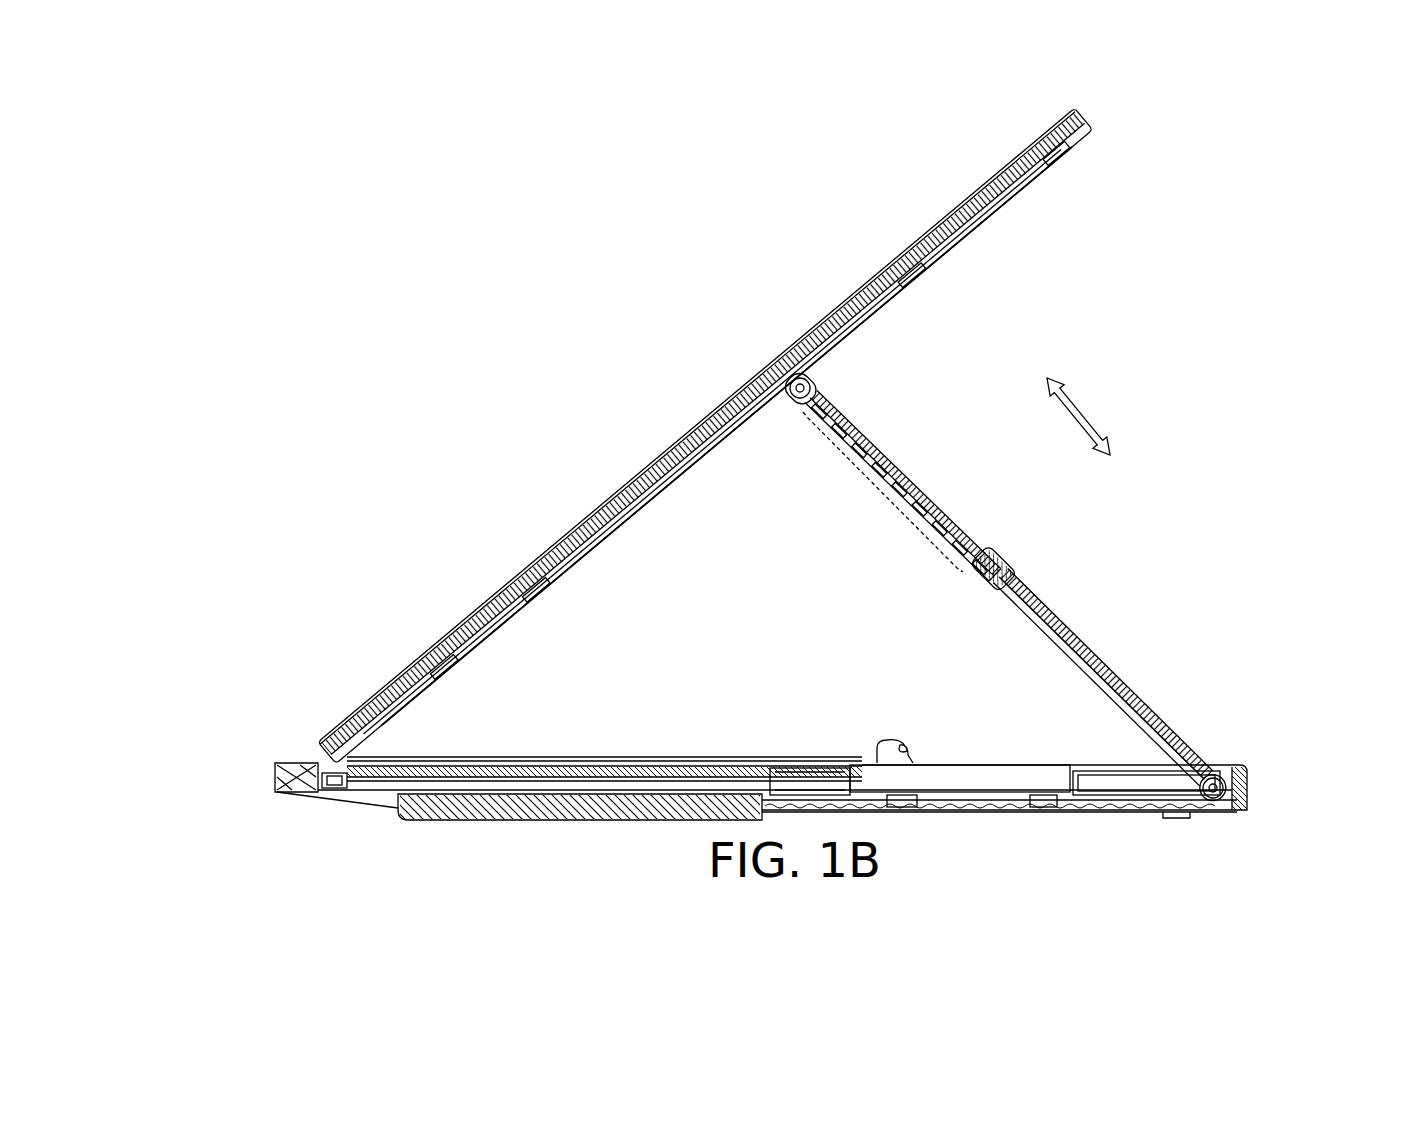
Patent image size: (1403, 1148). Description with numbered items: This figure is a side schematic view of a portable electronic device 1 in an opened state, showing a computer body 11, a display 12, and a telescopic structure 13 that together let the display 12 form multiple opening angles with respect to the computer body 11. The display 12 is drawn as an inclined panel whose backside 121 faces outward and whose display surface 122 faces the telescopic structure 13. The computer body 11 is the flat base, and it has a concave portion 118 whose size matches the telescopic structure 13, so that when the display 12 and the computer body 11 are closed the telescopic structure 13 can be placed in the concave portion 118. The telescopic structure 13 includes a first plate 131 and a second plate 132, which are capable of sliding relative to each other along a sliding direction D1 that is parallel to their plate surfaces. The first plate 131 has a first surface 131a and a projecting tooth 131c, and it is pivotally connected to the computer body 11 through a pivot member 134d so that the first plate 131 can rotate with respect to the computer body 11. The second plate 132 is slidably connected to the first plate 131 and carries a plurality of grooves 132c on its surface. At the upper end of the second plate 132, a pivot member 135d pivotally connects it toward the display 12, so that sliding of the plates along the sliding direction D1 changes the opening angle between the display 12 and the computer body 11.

The portable electronic device 1 is at (466, 322).
The computer body 11 is at (790, 757).
The concave portion 118 is at (991, 760).
The display 12 is at (903, 237).
The backside 121 is at (962, 255).
The display surface 122 is at (637, 438).
The telescopic structure 13 is at (1151, 517).
The first plate 131 is at (1157, 712).
The first surface 131a is at (1110, 680).
The projecting tooth 131c is at (1000, 560).
The second plate 132 is at (905, 455).
The grooves 132c is at (880, 495).
The pivot member 134d is at (1252, 768).
The pivot member 135d is at (815, 372).
The sliding direction D1 is at (1122, 396).